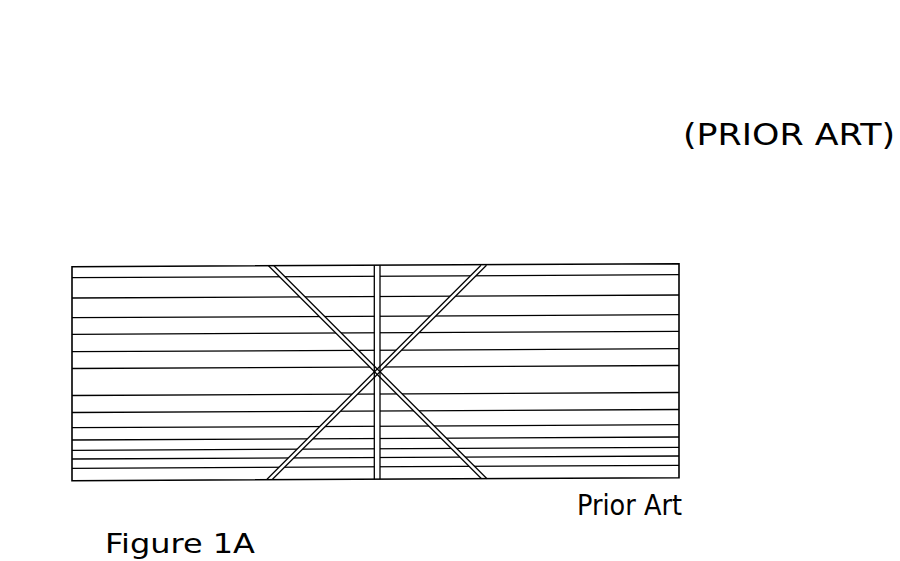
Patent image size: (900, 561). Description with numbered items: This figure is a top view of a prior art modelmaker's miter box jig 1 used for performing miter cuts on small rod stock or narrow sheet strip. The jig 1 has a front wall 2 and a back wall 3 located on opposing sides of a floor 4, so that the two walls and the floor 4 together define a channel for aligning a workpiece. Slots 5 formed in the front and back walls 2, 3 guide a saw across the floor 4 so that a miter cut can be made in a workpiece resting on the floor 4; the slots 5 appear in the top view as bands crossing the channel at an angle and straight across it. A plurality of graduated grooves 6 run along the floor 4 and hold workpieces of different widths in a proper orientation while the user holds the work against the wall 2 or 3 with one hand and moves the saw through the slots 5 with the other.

The jig 1 is at (448, 352).
The front wall 2 is at (673, 472).
The back wall 3 is at (599, 271).
The floor 4 is at (673, 303).
The slots 5 is at (376, 266).
The graduated grooves 6 is at (670, 282).